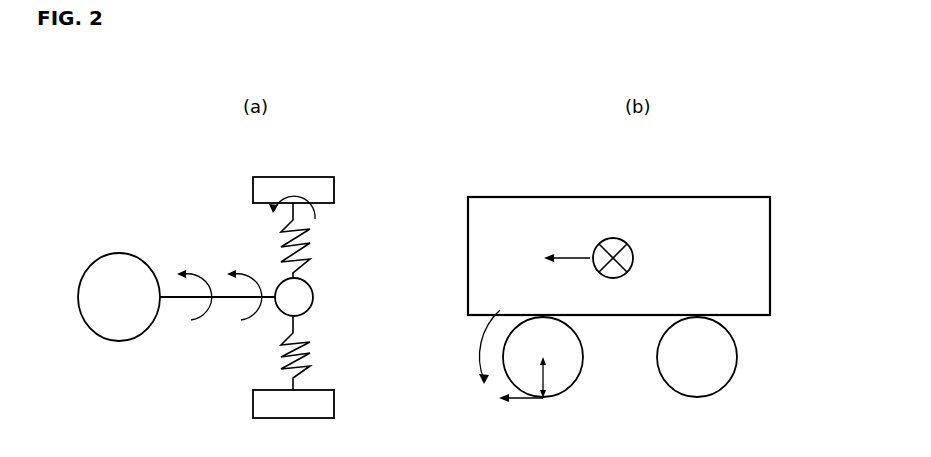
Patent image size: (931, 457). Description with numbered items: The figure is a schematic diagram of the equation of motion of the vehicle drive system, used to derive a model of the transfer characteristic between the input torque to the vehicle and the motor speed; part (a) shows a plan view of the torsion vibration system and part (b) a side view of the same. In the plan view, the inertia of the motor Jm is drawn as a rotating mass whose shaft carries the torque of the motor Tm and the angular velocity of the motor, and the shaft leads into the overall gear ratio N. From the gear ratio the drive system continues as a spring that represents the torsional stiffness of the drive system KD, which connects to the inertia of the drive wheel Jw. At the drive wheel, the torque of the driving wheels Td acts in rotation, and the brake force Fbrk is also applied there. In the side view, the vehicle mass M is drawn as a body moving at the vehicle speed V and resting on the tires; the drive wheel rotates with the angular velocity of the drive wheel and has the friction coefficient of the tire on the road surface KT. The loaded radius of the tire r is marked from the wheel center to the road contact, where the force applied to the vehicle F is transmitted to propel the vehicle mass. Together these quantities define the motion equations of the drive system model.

The inertia of the motor Jm is at (119, 297).
The torque of the motor Tm is at (242, 306).
The overall gear ratio N is at (304, 297).
The torsional stiffness of the drive system KD is at (310, 240).
The inertia of the drive wheel Jw is at (305, 178).
The torque of the driving wheels Td is at (310, 211).
The brake force Fbrk is at (249, 215).
The vehicle mass M is at (619, 256).
The vehicle speed V is at (552, 250).
The friction coefficient of the tire on the road surface KT is at (557, 357).
The force applied to the vehicle F is at (503, 388).
The loaded radius of the tire r is at (547, 377).